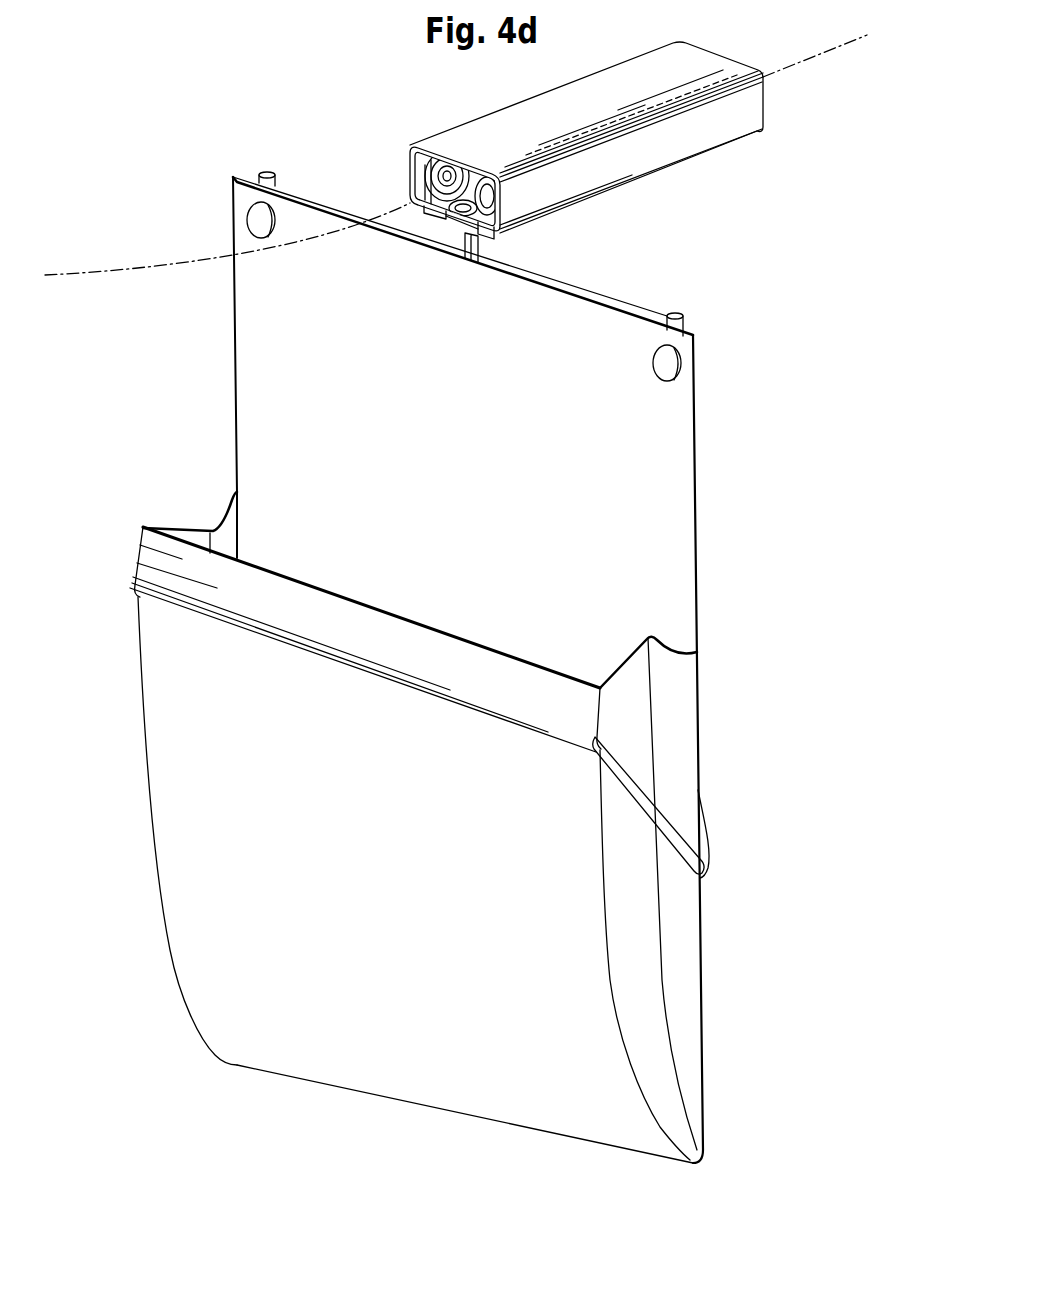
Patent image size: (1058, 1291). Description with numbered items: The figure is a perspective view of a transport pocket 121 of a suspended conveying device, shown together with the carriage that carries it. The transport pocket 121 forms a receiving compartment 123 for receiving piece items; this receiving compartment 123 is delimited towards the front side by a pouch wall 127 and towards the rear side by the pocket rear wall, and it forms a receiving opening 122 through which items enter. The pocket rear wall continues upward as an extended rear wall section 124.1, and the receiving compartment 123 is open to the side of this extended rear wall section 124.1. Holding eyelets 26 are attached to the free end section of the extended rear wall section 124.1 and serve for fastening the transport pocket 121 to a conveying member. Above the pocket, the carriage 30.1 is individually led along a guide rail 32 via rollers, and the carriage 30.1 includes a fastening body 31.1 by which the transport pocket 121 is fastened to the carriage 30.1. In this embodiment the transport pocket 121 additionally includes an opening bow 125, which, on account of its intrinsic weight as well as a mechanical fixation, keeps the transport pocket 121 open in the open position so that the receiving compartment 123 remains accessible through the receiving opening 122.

The holding eyelets 26 is at (261, 220).
The carriage 30.1 is at (440, 188).
The fastening body 31.1 is at (546, 277).
The guide rail 32 is at (688, 140).
The transport pocket 121 is at (698, 643).
The receiving opening 122 is at (448, 827).
The receiving compartment 123 is at (490, 913).
The extended rear wall section 124.1 is at (680, 533).
The opening bow 125 is at (638, 783).
The pouch wall 127 is at (185, 818).